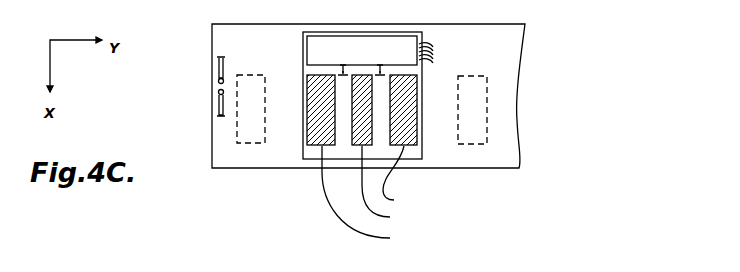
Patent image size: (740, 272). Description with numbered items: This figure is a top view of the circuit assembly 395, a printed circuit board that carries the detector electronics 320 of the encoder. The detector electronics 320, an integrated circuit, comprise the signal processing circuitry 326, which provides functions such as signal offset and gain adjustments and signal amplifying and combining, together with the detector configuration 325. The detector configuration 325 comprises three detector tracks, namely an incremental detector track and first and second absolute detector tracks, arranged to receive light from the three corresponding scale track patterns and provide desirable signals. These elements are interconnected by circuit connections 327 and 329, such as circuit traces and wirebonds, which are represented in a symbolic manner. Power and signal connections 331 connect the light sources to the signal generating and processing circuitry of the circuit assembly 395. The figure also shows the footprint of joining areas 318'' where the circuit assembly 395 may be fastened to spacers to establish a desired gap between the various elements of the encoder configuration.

The circuit assembly 395 is at (517, 118).
The detector electronics 320 is at (303, 153).
The signal processing circuitry 326 is at (413, 36).
The circuit connections 327 is at (340, 71).
The circuit connections 329 is at (438, 52).
The power and signal connections 331 is at (218, 92).
The joining areas 318'' is at (372, 112).
The detector configuration 325 is at (483, 189).